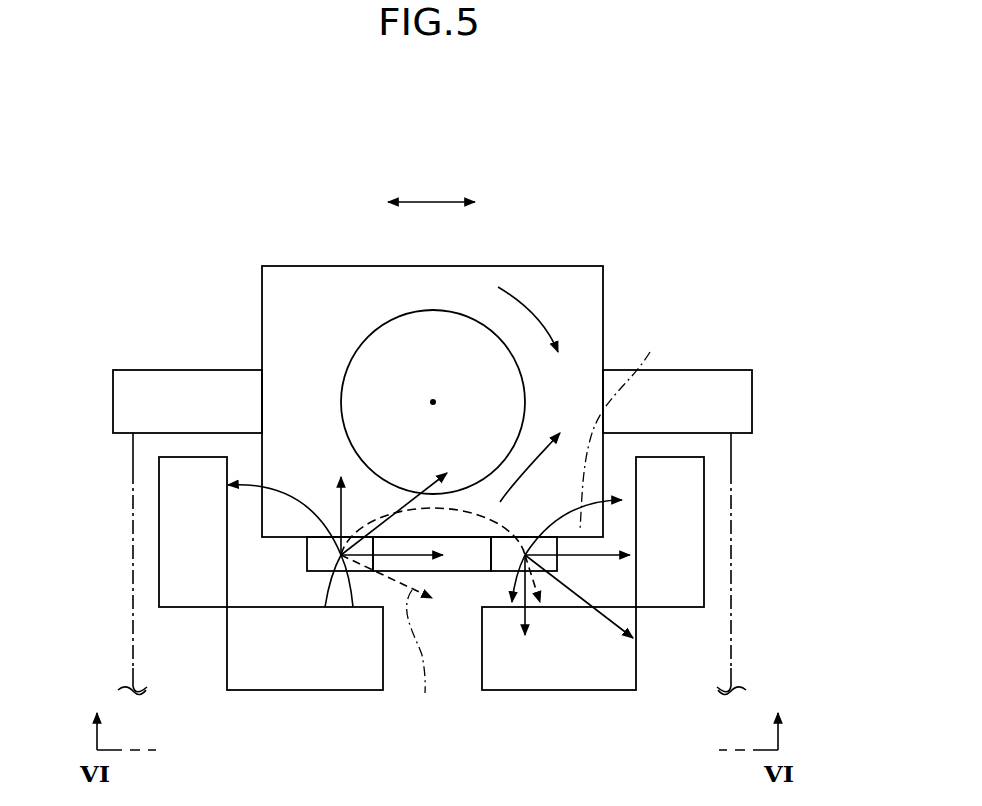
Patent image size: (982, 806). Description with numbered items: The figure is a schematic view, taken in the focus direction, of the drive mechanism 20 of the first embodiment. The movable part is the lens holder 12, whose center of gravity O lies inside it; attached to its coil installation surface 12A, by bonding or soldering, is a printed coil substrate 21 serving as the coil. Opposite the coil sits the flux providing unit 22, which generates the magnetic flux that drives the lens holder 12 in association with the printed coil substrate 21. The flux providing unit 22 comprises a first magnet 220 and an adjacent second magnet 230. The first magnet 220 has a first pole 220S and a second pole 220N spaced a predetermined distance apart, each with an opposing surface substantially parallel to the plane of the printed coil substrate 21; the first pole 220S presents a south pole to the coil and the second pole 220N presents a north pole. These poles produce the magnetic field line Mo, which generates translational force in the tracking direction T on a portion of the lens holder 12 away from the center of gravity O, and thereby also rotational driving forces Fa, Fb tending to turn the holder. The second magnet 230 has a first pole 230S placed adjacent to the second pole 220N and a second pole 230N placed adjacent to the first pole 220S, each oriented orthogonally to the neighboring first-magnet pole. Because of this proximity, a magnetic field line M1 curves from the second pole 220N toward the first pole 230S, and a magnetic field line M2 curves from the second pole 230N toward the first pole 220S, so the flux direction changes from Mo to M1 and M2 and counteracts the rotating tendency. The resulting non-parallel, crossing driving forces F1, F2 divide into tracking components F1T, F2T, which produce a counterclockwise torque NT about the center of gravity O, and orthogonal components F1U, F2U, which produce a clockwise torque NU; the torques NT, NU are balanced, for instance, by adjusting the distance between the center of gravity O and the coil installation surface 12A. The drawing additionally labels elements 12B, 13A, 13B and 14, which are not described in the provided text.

The lens holder 12 is at (327, 285).
The coil installation surface 12A is at (292, 540).
The side flanges of movable body 12B is at (190, 387).
The shaft (13D) 13A is at (133, 670).
The shaft (13C) 13B is at (738, 668).
The lens / rotor 14 is at (455, 332).
The drive mechanism 20 is at (628, 253).
The printed coil substrate 21 is at (468, 562).
The flux providing unit 22 is at (487, 698).
The first magnet 220 is at (380, 698).
The second pole of first magnet 220N is at (254, 683).
The first pole of first magnet 220S is at (575, 682).
The second magnet 230 is at (202, 623).
The first pole of second magnet 230S is at (177, 583).
The second pole of second magnet 230N is at (690, 583).
The tracking direction T is at (431, 184).
The center of gravity O is at (433, 402).
The torque NU is at (537, 317).
The torque NT is at (537, 463).
The driving force Fa is at (422, 658).
The driving force Fb is at (621, 427).
The driving force F1 is at (406, 496).
The component of force F1U is at (322, 498).
The component of force F1T is at (421, 554).
The driving force F2 is at (570, 590).
The component of force F2U is at (513, 622).
The component of force F2T is at (607, 555).
The magnetic field line M1 is at (278, 494).
The magnetic field line M2 is at (543, 527).
The magnetic field line Mo is at (485, 518).